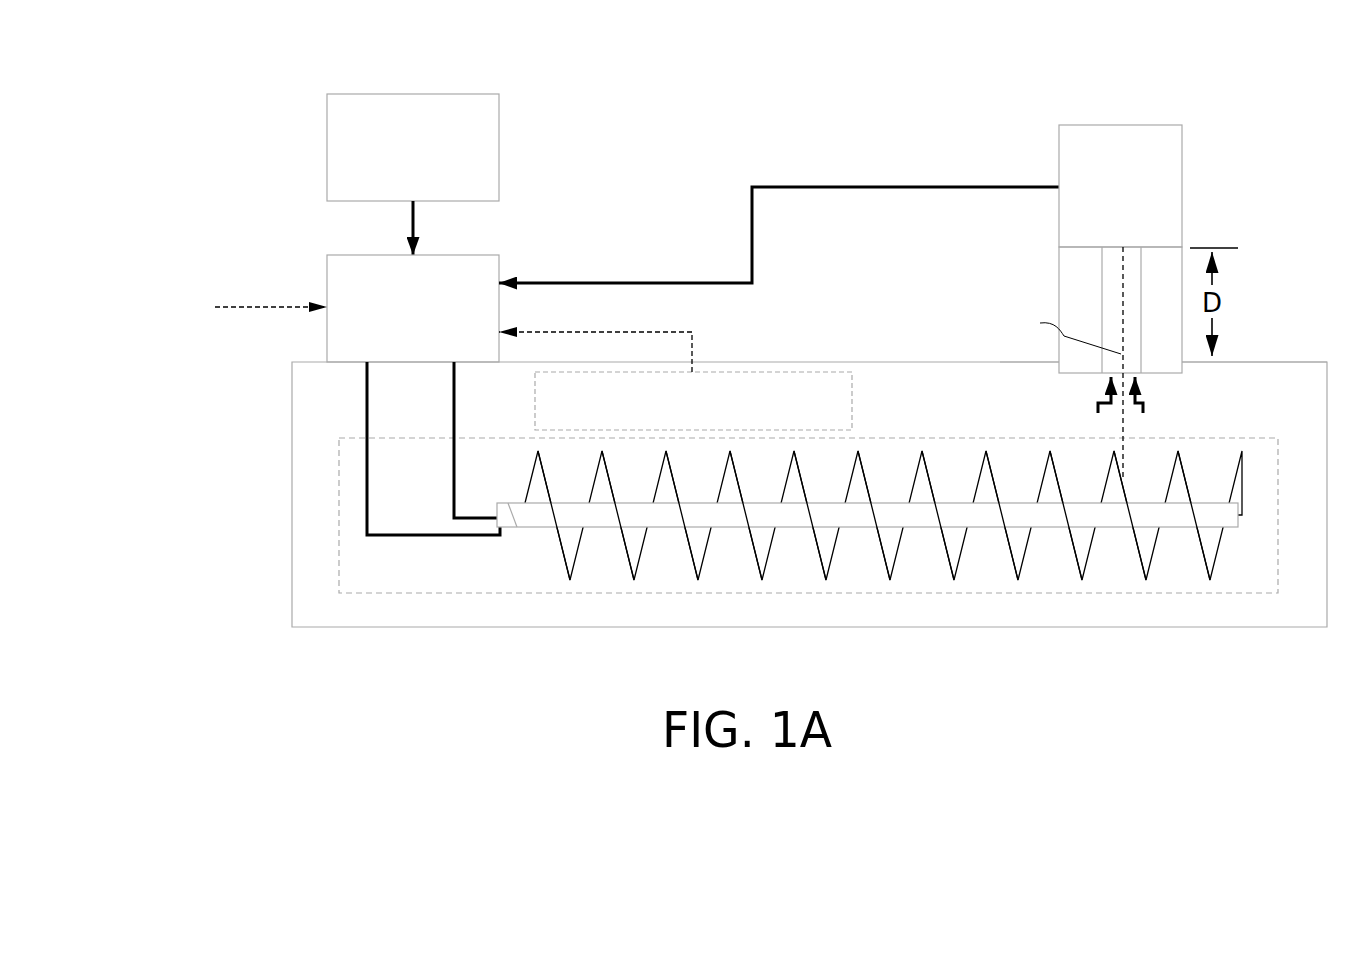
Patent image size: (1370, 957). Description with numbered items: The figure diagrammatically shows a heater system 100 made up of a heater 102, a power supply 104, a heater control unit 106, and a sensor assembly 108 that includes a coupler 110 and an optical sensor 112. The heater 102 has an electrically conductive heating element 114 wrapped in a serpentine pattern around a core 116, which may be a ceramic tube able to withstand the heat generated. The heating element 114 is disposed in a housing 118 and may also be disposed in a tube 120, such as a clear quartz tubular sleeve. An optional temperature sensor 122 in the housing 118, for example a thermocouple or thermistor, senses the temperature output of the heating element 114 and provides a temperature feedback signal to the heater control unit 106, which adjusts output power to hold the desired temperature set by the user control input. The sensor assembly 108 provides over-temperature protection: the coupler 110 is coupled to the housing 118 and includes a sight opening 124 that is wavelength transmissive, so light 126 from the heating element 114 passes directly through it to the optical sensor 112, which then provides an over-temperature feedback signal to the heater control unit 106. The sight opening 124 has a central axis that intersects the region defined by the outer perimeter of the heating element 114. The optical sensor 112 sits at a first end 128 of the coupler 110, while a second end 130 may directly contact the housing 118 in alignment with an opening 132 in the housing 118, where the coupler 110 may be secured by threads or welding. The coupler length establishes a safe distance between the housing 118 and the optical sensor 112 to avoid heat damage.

The heater system 100 is at (261, 110).
The heater 102 is at (280, 414).
The power supply 104 is at (392, 172).
The heater control unit 106 is at (392, 347).
The sensor assembly 108 is at (1132, 301).
The coupler 110 is at (1059, 265).
The optical sensor 112 is at (1141, 226).
The heating element 114 is at (1048, 462).
The core 116 is at (541, 528).
The housing 118 is at (292, 518).
The tube 120 is at (339, 578).
The temperature sensor 122 is at (673, 424).
The sight opening 124 is at (1102, 312).
The light 126 is at (1154, 398).
The first end of the coupler 128 is at (1193, 237).
The second end of the coupler 130 is at (1192, 368).
The opening in the housing 132 is at (1056, 362).